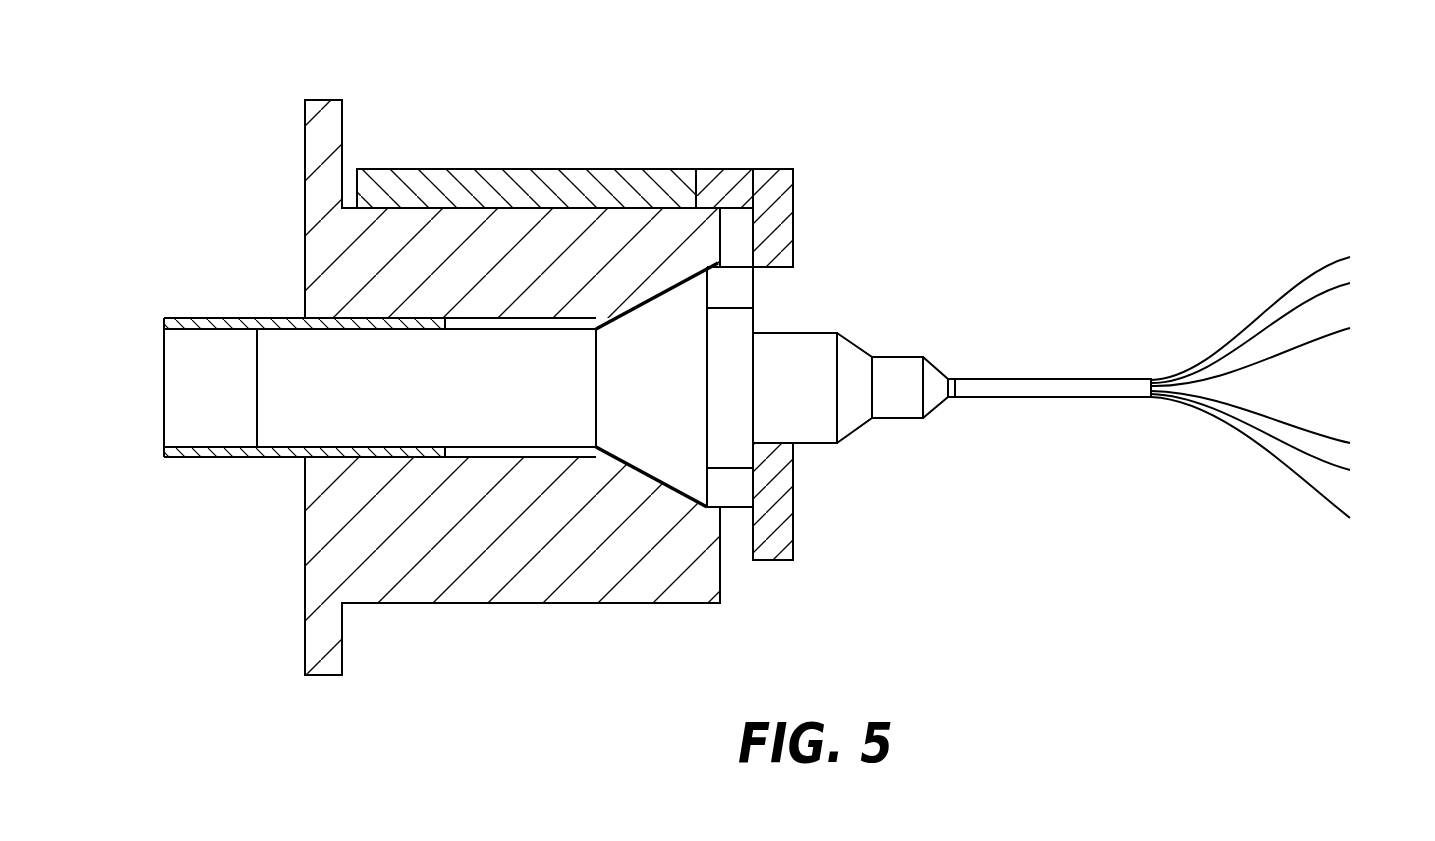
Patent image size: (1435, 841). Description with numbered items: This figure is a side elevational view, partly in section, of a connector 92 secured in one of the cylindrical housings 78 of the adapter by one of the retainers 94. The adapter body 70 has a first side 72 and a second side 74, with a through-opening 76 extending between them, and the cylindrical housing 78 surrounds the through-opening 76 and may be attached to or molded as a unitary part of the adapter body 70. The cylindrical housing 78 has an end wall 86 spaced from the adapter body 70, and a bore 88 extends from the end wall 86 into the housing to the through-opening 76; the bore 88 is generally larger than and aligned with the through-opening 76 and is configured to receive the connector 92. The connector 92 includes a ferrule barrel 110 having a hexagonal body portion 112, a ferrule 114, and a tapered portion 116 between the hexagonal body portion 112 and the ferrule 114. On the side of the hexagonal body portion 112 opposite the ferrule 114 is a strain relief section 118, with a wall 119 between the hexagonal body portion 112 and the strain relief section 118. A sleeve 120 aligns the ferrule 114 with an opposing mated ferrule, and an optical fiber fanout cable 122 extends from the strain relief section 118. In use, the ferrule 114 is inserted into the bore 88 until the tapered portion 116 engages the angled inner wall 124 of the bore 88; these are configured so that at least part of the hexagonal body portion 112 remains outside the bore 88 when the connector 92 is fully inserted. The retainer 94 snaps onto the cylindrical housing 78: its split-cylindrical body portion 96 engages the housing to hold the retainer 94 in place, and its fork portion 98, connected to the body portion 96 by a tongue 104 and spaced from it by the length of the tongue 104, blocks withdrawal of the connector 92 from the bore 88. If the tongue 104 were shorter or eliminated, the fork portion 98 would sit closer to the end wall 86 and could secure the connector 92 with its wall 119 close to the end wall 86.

The adapter body 70 is at (322, 98).
The first side 72 is at (341, 117).
The second side 74 is at (305, 145).
The through-opening 76 is at (297, 320).
The cylindrical housing 78 is at (343, 207).
The end wall 86 is at (722, 553).
The bore 88 is at (698, 512).
The connector 92 is at (965, 343).
The retainer 94 is at (605, 168).
The split-cylindrical body portion 96 is at (558, 187).
The fork portion 98 is at (793, 188).
The tongue 104 is at (737, 168).
The ferrule barrel 110 is at (693, 488).
The hexagonal body portion 112 is at (730, 290).
The ferrule 114 is at (323, 423).
The tapered portion 116 is at (683, 468).
The strain relief section 118 is at (890, 357).
The wall 119 is at (757, 453).
The sleeve 120 is at (230, 318).
The optical fiber fanout cable 122 is at (1045, 397).
The angled inner wall 124 is at (648, 480).